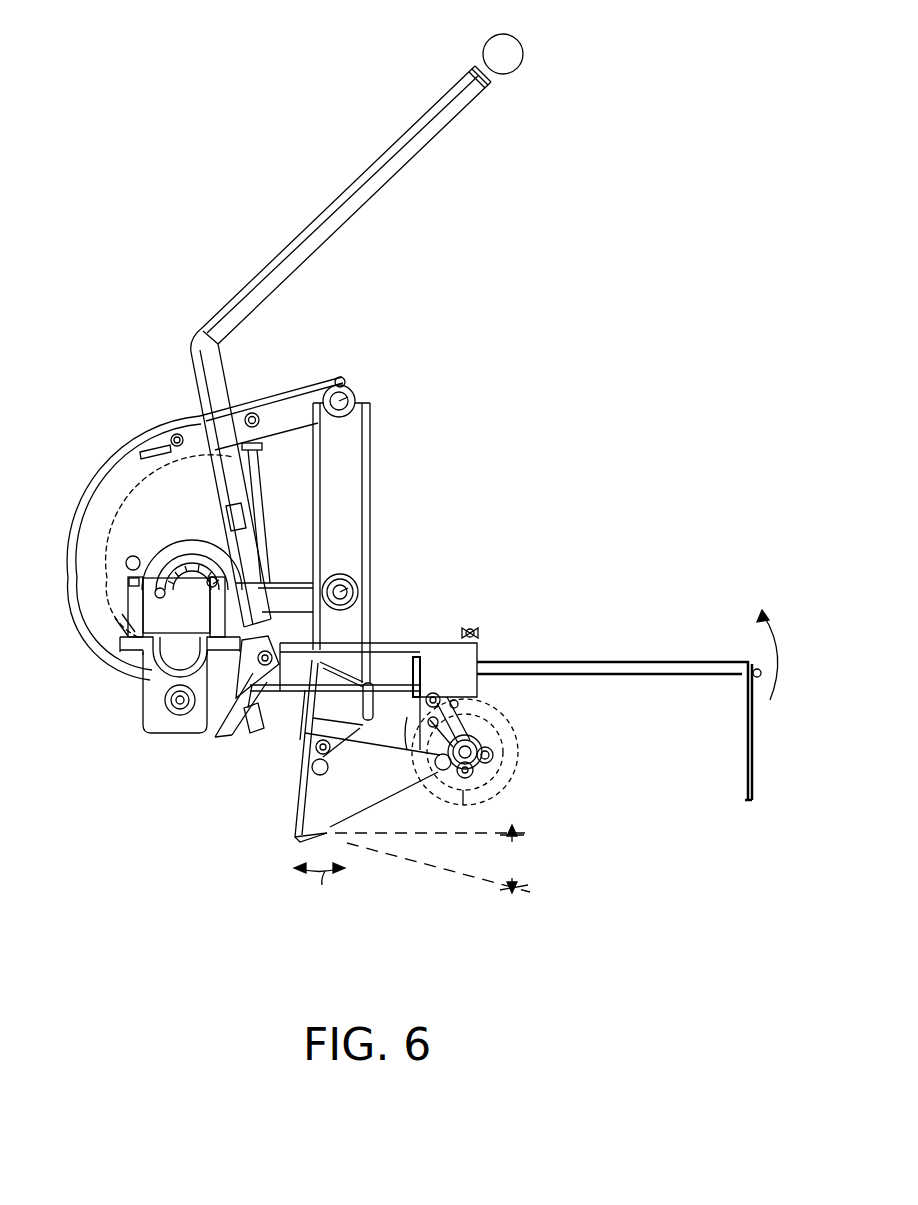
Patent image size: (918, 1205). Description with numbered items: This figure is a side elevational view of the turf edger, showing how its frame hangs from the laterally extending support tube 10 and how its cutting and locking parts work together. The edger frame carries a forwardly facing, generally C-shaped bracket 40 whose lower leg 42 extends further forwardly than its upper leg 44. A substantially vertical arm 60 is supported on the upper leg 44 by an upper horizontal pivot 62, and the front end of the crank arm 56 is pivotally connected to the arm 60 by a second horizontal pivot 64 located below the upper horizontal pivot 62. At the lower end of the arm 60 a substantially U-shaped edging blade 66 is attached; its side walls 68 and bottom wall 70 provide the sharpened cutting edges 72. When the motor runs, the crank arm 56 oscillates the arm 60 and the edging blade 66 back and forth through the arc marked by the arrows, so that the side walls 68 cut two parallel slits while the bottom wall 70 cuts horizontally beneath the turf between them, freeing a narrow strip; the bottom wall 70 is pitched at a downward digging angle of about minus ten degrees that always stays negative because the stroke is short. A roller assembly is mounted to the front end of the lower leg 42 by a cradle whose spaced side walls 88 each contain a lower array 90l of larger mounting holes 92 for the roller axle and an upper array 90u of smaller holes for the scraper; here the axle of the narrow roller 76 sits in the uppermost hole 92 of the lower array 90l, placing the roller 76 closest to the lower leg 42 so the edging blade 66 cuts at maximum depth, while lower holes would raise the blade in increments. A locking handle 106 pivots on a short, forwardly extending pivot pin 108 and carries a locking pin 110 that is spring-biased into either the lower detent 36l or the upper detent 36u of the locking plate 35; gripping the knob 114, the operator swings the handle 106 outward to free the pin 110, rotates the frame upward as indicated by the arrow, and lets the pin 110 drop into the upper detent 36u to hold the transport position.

The support tube 10 is at (142, 700).
The locking plate 35 is at (183, 585).
The upper detent 36u is at (158, 598).
The lower detent 36l is at (276, 652).
The C-shaped bracket 40 is at (90, 468).
The lower leg 42 is at (403, 657).
The upper leg 44 is at (287, 398).
The crank arm 56 is at (303, 588).
The arm 60 is at (357, 470).
The upper horizontal pivot 62 is at (349, 396).
The second horizontal pivot 64 is at (358, 592).
The edging blade 66 is at (298, 805).
The side walls 68 is at (357, 785).
The bottom wall 70 is at (296, 836).
The cutting edges 72 is at (400, 803).
The roller 76 is at (517, 760).
The side walls 88 is at (458, 660).
The upper array 90u is at (458, 695).
The lower array 90l is at (484, 742).
The mounting holes 92 is at (470, 773).
The locking handle 106 is at (318, 220).
The pivot pin 108 is at (262, 720).
The locking pin 110 is at (240, 705).
The knob 114 is at (521, 59).